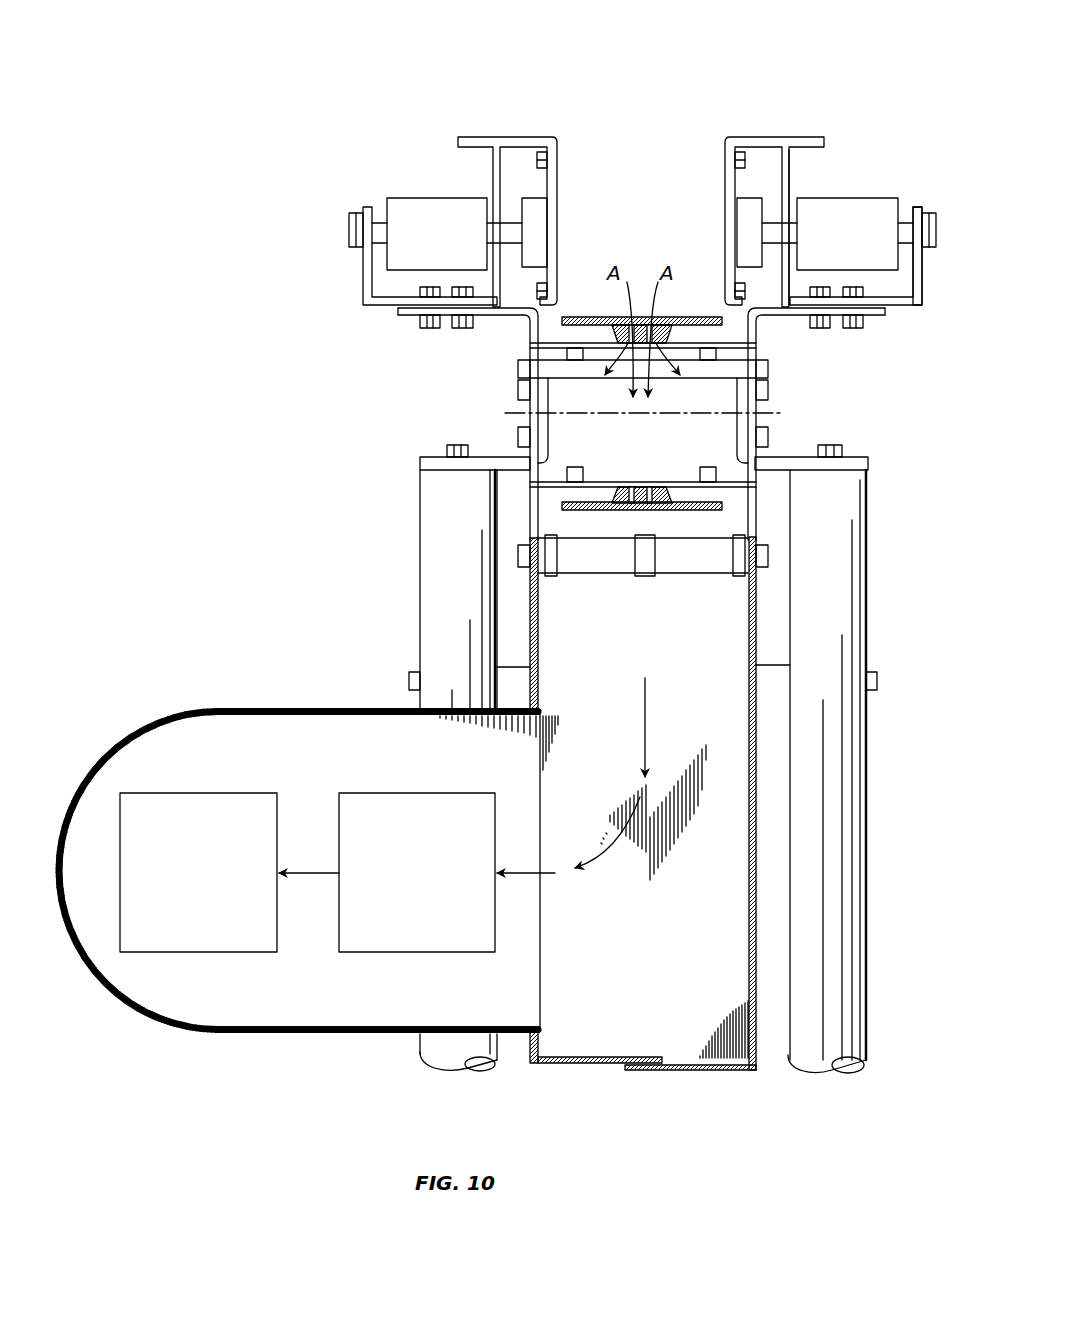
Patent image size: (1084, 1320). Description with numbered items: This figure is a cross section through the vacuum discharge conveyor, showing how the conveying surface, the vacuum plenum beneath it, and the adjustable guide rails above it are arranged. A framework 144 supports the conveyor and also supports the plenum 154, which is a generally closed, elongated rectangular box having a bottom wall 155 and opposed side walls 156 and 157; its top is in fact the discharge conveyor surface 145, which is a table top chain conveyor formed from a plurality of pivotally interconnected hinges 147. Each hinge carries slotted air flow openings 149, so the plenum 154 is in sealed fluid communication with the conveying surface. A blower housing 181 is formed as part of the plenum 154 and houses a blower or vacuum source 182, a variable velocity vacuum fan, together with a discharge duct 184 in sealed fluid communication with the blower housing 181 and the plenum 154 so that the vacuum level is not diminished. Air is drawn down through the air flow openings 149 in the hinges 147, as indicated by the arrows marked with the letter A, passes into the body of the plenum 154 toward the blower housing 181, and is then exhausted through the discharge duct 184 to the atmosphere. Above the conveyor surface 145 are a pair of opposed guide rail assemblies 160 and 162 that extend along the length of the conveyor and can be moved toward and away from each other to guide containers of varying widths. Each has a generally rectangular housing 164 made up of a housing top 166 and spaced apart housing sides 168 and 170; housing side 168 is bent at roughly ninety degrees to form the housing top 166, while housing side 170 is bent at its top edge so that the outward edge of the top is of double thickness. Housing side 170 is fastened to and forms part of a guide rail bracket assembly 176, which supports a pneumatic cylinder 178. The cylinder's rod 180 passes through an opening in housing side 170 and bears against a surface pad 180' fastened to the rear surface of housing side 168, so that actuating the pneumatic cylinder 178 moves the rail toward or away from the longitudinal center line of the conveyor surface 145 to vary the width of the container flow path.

The housing 164 is at (814, 197).
The guide rail assembly 160 is at (787, 137).
The housing top 166 is at (741, 180).
The housing side 168 is at (737, 180).
The housing side 170 is at (788, 192).
The pneumatic cylinder 178 is at (875, 222).
The rod 180 is at (849, 287).
The guide rail assembly 162 is at (527, 137).
The surface pad 180' is at (473, 202).
The guide rail bracket assembly 176 is at (443, 357).
The discharge conveyor surface 145 is at (597, 317).
The air flow openings 149 is at (647, 505).
The hinges 147 is at (700, 510).
The framework 144 is at (435, 565).
The blower housing 181 is at (307, 810).
The discharge duct 184 is at (218, 886).
The blower 182 is at (436, 886).
The plenum 154 is at (639, 852).
The side wall 156 is at (542, 630).
The side wall 157 is at (752, 847).
The bottom wall 155 is at (650, 1072).